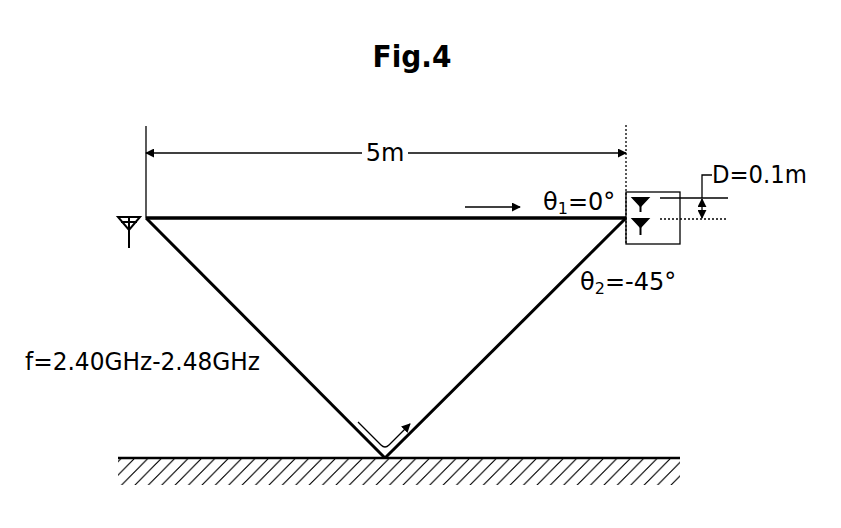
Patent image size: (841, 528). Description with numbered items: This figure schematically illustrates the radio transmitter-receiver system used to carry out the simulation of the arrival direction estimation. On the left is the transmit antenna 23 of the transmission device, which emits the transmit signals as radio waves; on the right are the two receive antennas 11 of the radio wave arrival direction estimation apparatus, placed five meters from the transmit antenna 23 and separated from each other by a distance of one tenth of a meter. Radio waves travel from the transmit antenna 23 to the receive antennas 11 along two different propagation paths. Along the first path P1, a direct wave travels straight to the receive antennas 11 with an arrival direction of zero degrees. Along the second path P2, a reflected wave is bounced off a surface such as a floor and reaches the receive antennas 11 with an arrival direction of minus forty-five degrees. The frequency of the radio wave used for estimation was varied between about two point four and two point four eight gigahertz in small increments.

The receive antennas 11 is at (667, 192).
The transmit antenna 23 is at (106, 213).
The first path P1 is at (386, 198).
The second path P2 is at (505, 338).